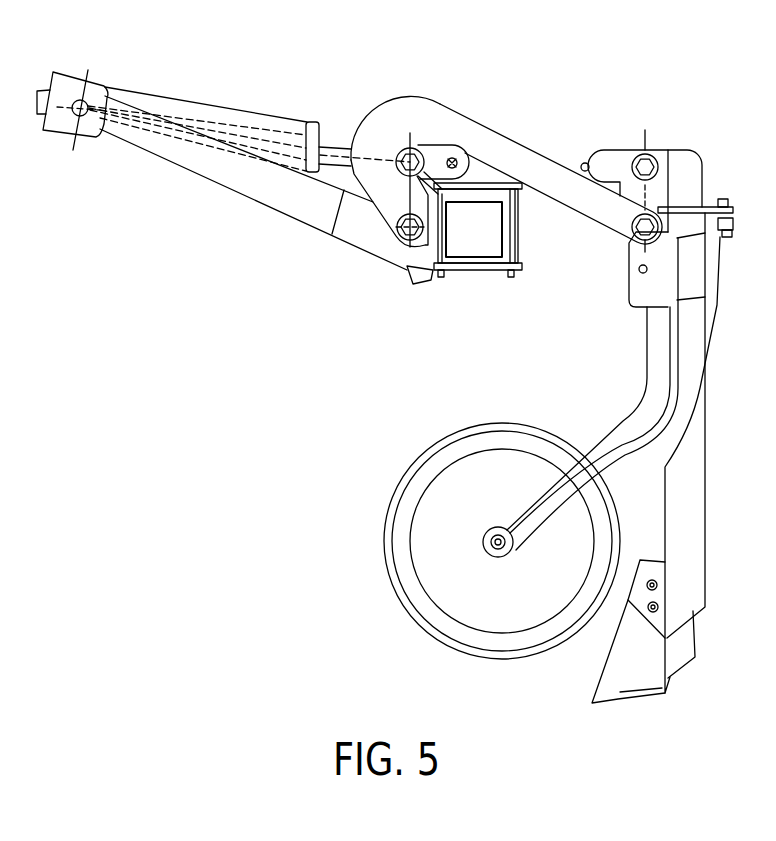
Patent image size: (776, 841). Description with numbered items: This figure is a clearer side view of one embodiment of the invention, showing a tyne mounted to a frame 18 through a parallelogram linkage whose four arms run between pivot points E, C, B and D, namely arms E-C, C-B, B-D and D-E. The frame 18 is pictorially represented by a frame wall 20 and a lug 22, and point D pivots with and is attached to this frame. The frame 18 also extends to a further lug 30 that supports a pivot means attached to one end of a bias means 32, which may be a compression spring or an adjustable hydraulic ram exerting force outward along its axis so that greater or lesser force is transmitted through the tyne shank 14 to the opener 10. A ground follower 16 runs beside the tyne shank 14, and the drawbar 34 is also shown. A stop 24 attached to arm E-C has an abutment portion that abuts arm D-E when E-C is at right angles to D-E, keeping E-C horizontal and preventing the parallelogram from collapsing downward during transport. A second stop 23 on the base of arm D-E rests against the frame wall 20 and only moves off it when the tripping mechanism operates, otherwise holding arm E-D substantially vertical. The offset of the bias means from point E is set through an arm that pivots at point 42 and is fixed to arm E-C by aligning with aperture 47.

The opener 10 is at (672, 676).
The tyne shank 14 is at (703, 553).
The ground follower 16 is at (384, 545).
The frame 18 is at (539, 255).
The frame wall 20 is at (418, 286).
The lug 22 is at (396, 252).
The stop 23 is at (390, 100).
The stop 24 is at (450, 142).
The lug 30 is at (68, 80).
The bias means 32 is at (260, 118).
The drawbar 34 is at (470, 274).
The pivot point 42 is at (458, 158).
The aperture 47 is at (590, 165).
The parallelogram pivot point B is at (684, 205).
The parallelogram pivot point C is at (671, 147).
The parallelogram pivot point D is at (390, 240).
The parallelogram pivot point E is at (351, 142).